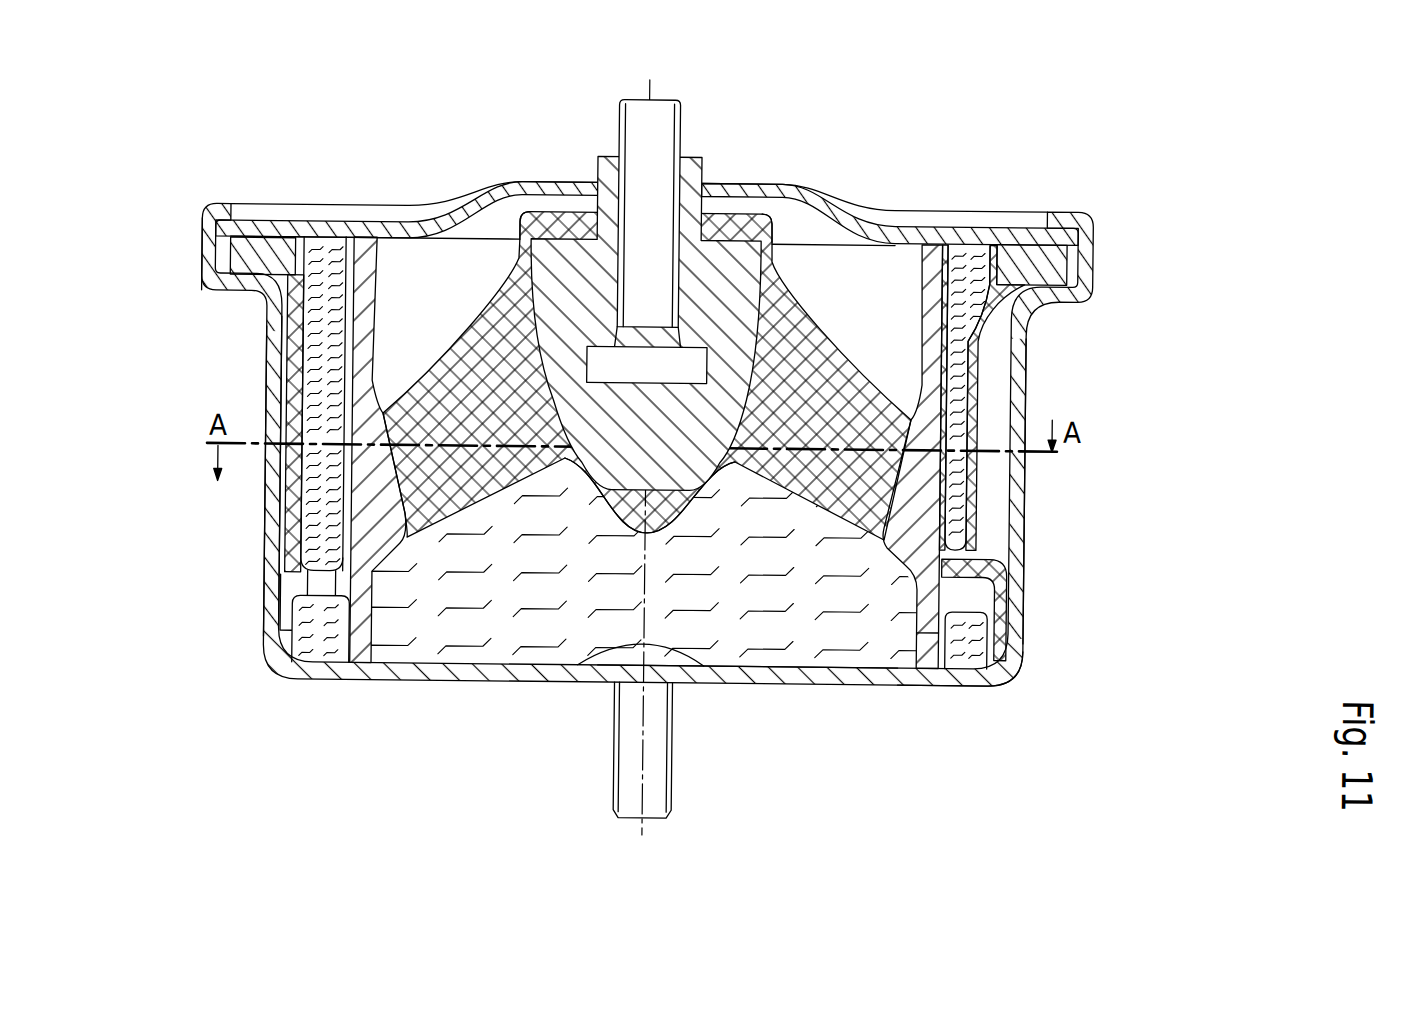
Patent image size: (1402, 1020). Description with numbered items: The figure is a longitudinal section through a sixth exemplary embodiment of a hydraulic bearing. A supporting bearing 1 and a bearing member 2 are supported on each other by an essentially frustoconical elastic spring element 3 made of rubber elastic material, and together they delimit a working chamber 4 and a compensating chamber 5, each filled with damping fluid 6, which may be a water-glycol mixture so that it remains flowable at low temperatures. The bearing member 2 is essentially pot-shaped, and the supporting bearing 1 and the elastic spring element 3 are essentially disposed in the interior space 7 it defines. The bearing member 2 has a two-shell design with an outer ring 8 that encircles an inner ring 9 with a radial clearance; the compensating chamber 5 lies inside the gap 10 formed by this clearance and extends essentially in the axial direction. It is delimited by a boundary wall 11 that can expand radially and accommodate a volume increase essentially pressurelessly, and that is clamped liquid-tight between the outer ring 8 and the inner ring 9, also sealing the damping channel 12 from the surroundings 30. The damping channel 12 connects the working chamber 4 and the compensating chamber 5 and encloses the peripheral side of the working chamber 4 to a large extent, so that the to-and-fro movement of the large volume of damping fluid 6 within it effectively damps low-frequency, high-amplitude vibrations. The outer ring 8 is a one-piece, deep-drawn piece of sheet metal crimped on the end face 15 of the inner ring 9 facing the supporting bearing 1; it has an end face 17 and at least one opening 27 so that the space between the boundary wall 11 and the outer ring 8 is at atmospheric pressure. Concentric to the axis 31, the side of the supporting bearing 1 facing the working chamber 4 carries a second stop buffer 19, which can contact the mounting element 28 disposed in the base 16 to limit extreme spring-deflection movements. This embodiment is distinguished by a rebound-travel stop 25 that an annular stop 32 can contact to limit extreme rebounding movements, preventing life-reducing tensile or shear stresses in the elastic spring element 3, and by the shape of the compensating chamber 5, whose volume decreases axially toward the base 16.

The supporting bearing 1 is at (687, 193).
The bearing member 2 is at (424, 670).
The elastic spring element 3 is at (806, 338).
The working chamber 4 is at (810, 604).
The compensating chamber 5 is at (950, 481).
The damping fluid 6 is at (529, 644).
The interior space 7 is at (882, 345).
The outer ring 8 is at (275, 417).
The inner ring 9 is at (367, 338).
The gap 10 is at (265, 457).
The boundary wall 11 is at (287, 384).
The damping channel 12 is at (975, 634).
The end face 15 is at (351, 239).
The base 16 is at (737, 672).
The end face 17 is at (960, 684).
The second stop buffer 19 is at (653, 523).
The rebound-travel stop 25 is at (787, 192).
The opening 27 is at (1018, 406).
The mounting element 28 is at (634, 792).
The surroundings 30 is at (1149, 463).
The axis 31 is at (649, 85).
The annular stop 32 is at (548, 231).